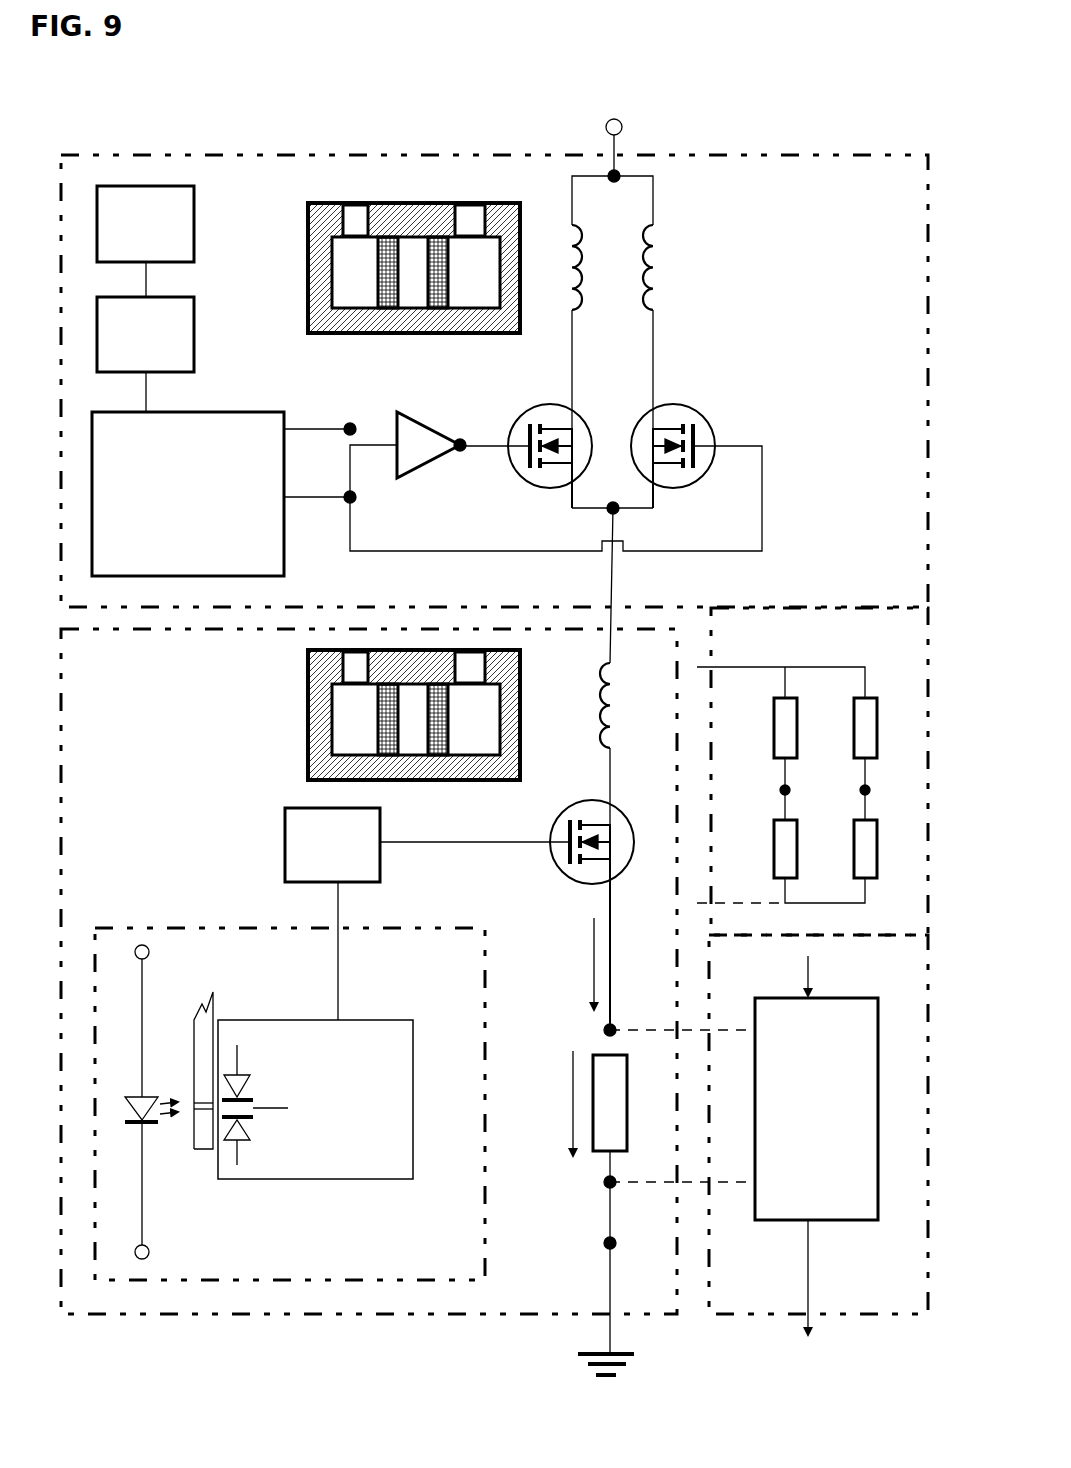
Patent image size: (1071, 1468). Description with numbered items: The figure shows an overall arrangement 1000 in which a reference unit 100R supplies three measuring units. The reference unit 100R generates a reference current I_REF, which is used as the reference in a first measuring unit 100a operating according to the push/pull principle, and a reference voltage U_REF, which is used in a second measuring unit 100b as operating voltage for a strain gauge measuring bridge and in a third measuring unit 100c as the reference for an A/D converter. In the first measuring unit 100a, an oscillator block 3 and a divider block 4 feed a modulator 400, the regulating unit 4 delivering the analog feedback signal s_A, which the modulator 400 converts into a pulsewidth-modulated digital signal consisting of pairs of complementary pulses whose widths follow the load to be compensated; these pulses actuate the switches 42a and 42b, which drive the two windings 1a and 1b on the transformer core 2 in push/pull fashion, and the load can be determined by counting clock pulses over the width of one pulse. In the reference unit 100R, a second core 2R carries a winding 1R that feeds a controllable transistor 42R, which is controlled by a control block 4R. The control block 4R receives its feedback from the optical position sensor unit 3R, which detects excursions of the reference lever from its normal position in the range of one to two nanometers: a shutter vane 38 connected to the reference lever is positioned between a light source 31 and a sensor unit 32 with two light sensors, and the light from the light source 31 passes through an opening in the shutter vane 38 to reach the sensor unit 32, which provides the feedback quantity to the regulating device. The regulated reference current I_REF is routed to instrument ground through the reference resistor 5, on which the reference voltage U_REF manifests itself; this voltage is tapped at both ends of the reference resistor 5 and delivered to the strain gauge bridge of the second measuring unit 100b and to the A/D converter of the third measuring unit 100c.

The measuring system 1000 is at (732, 116).
The first measuring unit 100a is at (495, 381).
The second measuring unit 100b is at (812, 771).
The third measuring unit 100c is at (819, 1135).
The reference unit 100R is at (369, 971).
The oscillator 3 is at (145, 224).
The regulating device 4 is at (145, 337).
The modulator 400 is at (427, 488).
The transmitter transformer core 2 is at (298, 302).
The receiver transformer core 2R is at (298, 750).
The first primary winding 1a is at (593, 299).
The second primary winding 1b is at (672, 327).
The switch 42a is at (550, 439).
The switch 42b is at (644, 516).
The receiver winding 1R is at (632, 744).
The receiver transistor 42R is at (611, 905).
The receiver control unit 4R is at (427, 914).
The optical position sensor unit 3R is at (290, 1104).
The light source 31 is at (141, 1102).
The shutter vane 38 is at (187, 1070).
The sensor unit 32 is at (315, 1099).
The reference resistor 5 is at (641, 1146).